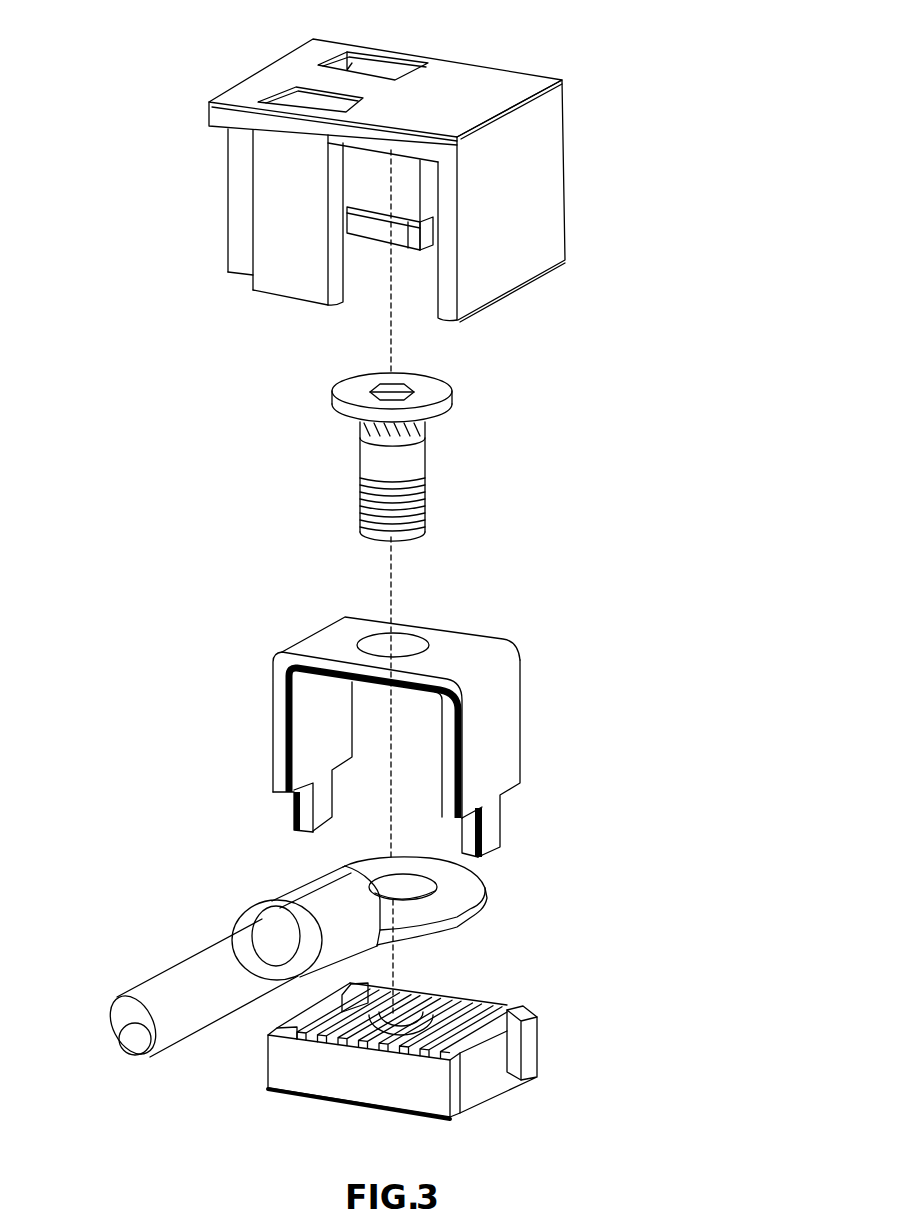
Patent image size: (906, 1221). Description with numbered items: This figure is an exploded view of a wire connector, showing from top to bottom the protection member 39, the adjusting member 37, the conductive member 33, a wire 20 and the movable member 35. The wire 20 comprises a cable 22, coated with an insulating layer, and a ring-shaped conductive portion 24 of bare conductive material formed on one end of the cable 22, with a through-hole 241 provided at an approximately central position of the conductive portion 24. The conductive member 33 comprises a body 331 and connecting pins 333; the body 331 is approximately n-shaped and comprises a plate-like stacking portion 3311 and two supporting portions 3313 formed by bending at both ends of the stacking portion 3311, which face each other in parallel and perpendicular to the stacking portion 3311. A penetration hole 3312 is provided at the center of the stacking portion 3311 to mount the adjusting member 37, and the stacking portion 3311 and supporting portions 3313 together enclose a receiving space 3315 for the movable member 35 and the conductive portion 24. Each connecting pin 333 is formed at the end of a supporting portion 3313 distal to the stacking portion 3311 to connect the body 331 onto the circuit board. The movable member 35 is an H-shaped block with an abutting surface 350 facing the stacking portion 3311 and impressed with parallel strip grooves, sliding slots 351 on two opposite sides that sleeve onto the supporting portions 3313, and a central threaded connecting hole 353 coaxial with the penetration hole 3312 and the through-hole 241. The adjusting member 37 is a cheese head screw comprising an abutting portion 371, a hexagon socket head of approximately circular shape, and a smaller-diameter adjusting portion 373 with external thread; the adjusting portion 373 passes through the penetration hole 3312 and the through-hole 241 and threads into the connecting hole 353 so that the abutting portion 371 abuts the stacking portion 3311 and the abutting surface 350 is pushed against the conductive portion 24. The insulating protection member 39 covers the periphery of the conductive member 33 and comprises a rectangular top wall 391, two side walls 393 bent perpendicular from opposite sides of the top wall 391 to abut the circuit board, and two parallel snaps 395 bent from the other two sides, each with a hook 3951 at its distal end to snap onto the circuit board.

The wire 20 is at (206, 882).
The cable 22 is at (178, 990).
The conductive portion 24 is at (478, 908).
The through-hole 241 is at (484, 889).
The conductive member 33 is at (437, 600).
The body 331 is at (645, 592).
The stacking portion 3311 is at (457, 650).
The penetration hole 3312 is at (377, 645).
The supporting portion 3313 is at (498, 712).
The receiving space 3315 is at (372, 735).
The connecting pin 333 is at (487, 832).
The movable member 35 is at (560, 1056).
The abutting surface 350 is at (487, 993).
The sliding slot 351 is at (487, 1067).
The connecting hole 353 is at (410, 995).
The adjusting member 37 is at (198, 382).
The abutting portion 371 is at (340, 405).
The adjusting portion 373 is at (357, 490).
The protection member 39 is at (590, 78).
The top wall 391 is at (294, 76).
The side wall 393 is at (547, 148).
The snap 395 is at (367, 187).
The hook 3951 is at (357, 225).